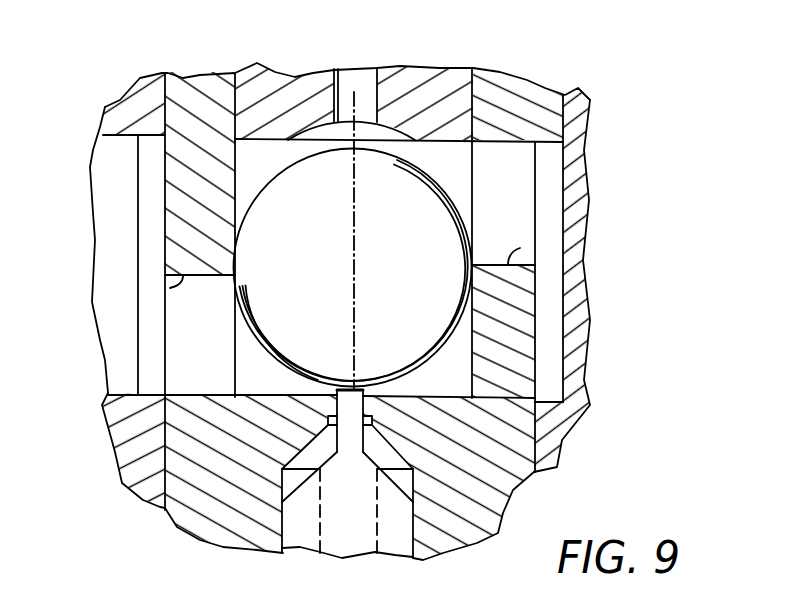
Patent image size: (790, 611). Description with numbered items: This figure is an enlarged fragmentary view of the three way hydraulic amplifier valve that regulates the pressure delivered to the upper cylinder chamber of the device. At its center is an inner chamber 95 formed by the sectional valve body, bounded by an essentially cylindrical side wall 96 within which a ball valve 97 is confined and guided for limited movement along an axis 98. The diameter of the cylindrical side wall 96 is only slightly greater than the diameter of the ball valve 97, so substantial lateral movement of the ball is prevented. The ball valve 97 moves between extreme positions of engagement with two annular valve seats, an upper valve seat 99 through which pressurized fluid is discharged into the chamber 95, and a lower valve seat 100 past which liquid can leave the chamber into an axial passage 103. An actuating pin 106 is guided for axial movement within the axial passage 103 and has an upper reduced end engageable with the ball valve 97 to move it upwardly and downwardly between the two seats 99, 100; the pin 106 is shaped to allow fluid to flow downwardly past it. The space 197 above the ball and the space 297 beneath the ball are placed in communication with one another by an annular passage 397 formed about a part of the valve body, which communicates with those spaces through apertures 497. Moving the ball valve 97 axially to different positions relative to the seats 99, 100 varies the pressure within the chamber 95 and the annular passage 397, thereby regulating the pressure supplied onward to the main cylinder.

The inner chamber 95 is at (253, 162).
The cylindrical side wall 96 is at (243, 184).
The ball valve 97 is at (418, 217).
The axis 98 is at (356, 297).
The annular valve seat 99 is at (387, 113).
The annular valve seat 100 is at (380, 422).
The axial passage 103 is at (320, 418).
The actuating pin 106 is at (372, 401).
The space above the ball 197 is at (442, 152).
The space beneath the ball 297 is at (165, 462).
The annular passage 397 is at (552, 197).
The apertures 497 is at (170, 288).